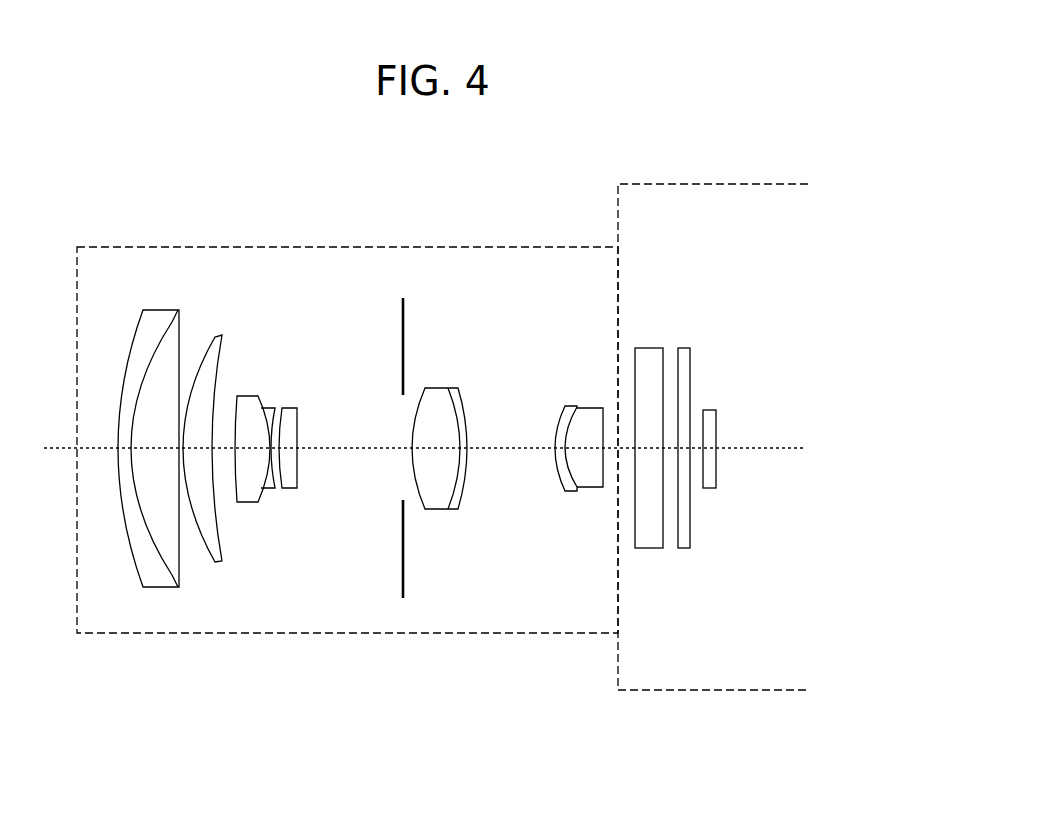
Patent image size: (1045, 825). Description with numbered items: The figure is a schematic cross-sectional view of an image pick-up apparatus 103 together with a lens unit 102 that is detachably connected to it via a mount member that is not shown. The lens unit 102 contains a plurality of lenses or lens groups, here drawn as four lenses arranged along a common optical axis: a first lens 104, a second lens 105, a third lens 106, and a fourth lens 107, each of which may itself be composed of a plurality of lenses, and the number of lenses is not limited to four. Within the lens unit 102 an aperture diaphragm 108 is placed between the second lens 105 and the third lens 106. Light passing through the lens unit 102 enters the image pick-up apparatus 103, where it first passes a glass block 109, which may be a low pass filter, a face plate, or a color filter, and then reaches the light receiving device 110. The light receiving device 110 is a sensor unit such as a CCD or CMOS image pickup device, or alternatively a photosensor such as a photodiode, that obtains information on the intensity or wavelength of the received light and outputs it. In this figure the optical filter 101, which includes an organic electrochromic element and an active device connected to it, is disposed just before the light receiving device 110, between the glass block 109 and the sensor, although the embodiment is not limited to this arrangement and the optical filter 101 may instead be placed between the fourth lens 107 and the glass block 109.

The optical filter 101 is at (685, 347).
The lens unit 102 is at (204, 242).
The image pick-up apparatus 103 is at (650, 173).
The first lens 104 is at (225, 303).
The second lens 105 is at (297, 378).
The third lens 106 is at (465, 378).
The fourth lens 107 is at (607, 398).
The aperture diaphragm 108 is at (403, 313).
The glass block 109 is at (645, 348).
The light receiving device 110 is at (706, 410).